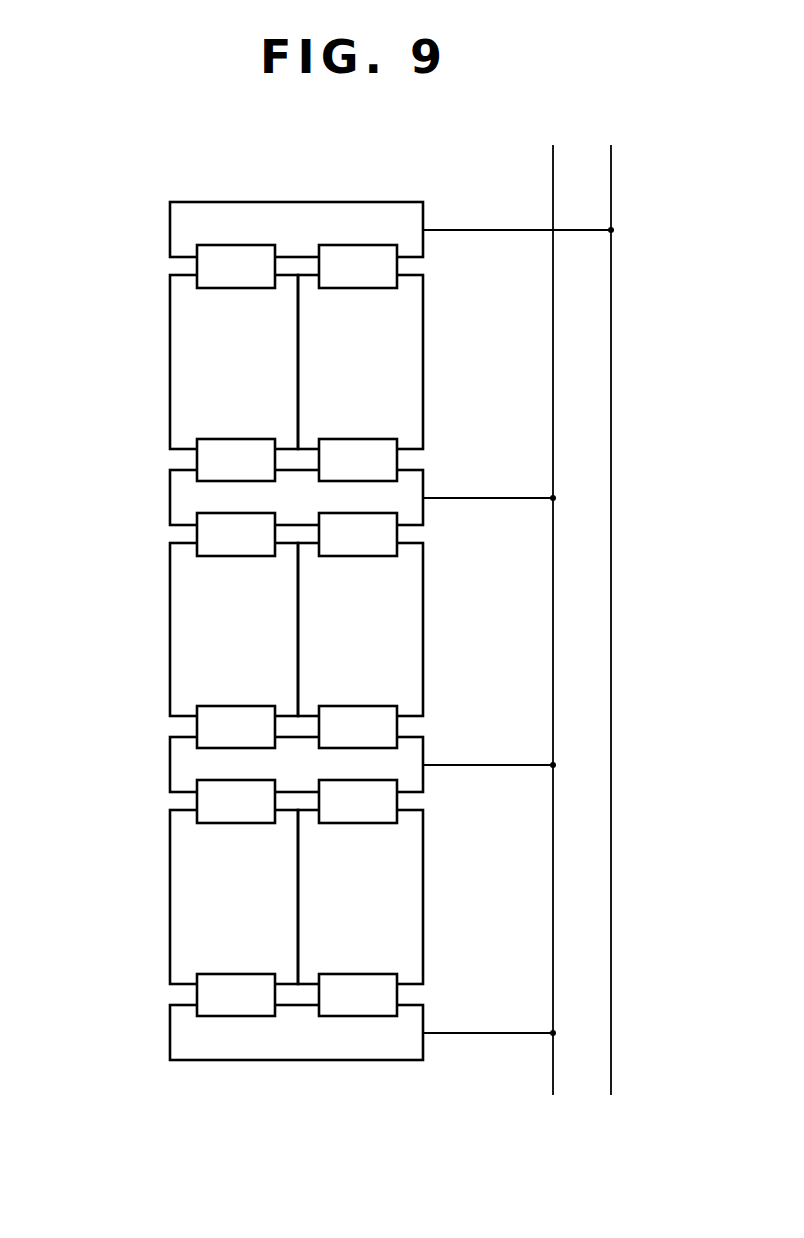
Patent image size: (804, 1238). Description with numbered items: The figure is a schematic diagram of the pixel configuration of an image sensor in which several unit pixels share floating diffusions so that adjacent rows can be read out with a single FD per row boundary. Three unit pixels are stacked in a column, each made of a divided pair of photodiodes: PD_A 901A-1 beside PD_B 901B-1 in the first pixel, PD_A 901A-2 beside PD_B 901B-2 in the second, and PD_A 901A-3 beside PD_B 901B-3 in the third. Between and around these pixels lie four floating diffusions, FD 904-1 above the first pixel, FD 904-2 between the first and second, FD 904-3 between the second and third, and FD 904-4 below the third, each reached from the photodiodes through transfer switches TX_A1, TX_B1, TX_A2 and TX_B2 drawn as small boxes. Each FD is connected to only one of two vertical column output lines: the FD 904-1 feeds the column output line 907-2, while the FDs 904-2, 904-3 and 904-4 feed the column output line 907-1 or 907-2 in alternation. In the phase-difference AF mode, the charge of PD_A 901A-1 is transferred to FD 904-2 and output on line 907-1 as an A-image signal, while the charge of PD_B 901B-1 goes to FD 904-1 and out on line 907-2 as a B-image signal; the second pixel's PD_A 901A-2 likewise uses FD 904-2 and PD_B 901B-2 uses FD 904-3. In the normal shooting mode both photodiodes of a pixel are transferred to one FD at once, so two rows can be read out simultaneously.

The FD 904-1 is at (170, 228).
The FD 904-2 is at (170, 496).
The FD 904-3 is at (170, 763).
The FD 904-4 is at (170, 1031).
The PD_A 901A-1 is at (170, 339).
The PD_A 901A-2 is at (170, 607).
The PD_A 901A-3 is at (170, 874).
The PD_B 901B-1 is at (423, 339).
The PD_B 901B-2 is at (423, 607).
The PD_B 901B-3 is at (423, 874).
The column output line 907-1 is at (553, 158).
The column output line 907-2 is at (611, 158).